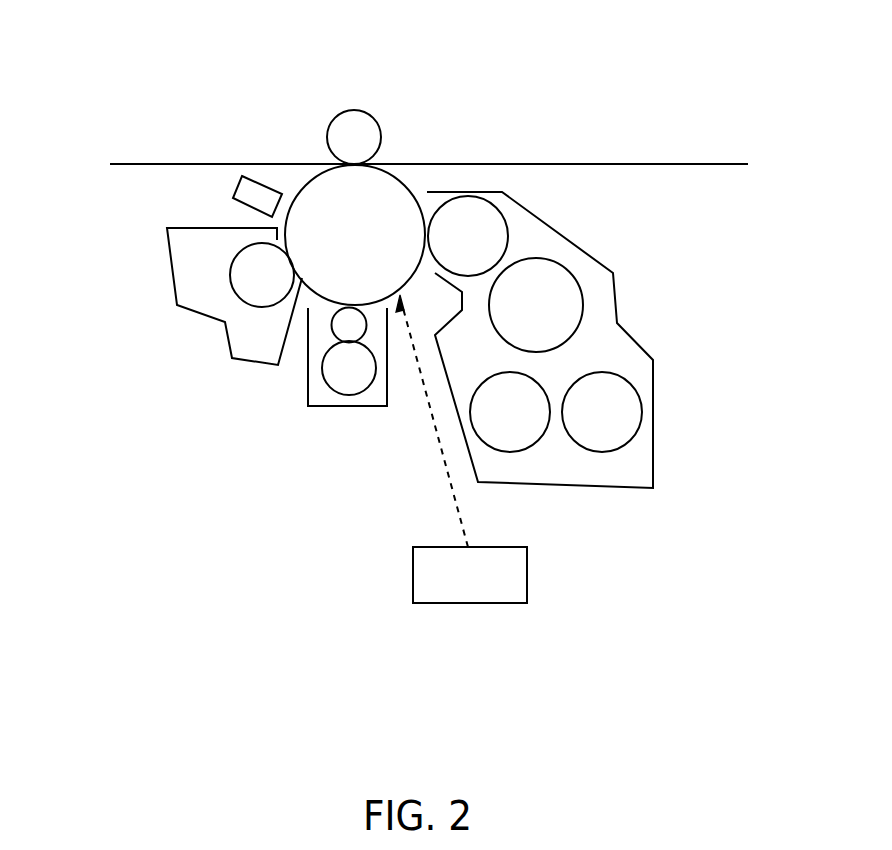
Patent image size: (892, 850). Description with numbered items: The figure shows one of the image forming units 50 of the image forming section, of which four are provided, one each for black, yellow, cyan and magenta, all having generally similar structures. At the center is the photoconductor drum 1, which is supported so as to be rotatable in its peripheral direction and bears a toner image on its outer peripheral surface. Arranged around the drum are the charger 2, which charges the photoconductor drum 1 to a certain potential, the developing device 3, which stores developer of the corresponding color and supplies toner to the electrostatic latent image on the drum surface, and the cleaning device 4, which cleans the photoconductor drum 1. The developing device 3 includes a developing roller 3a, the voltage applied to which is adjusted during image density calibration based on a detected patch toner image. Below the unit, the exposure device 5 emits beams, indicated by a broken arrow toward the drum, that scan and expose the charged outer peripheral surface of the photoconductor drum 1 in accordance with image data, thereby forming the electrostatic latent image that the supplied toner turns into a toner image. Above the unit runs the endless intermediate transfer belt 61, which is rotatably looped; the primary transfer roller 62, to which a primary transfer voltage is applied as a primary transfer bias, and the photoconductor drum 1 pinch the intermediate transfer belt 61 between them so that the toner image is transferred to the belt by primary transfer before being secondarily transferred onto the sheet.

The photoconductor drum 1 is at (307, 187).
The charger 2 is at (347, 406).
The developing device 3 is at (653, 392).
The developing roller 3a is at (497, 228).
The cleaning device 4 is at (248, 362).
The exposure device 5 is at (527, 580).
The image forming unit 50 is at (283, 437).
The intermediate transfer belt 61 is at (726, 164).
The primary transfer roller 62 is at (355, 110).